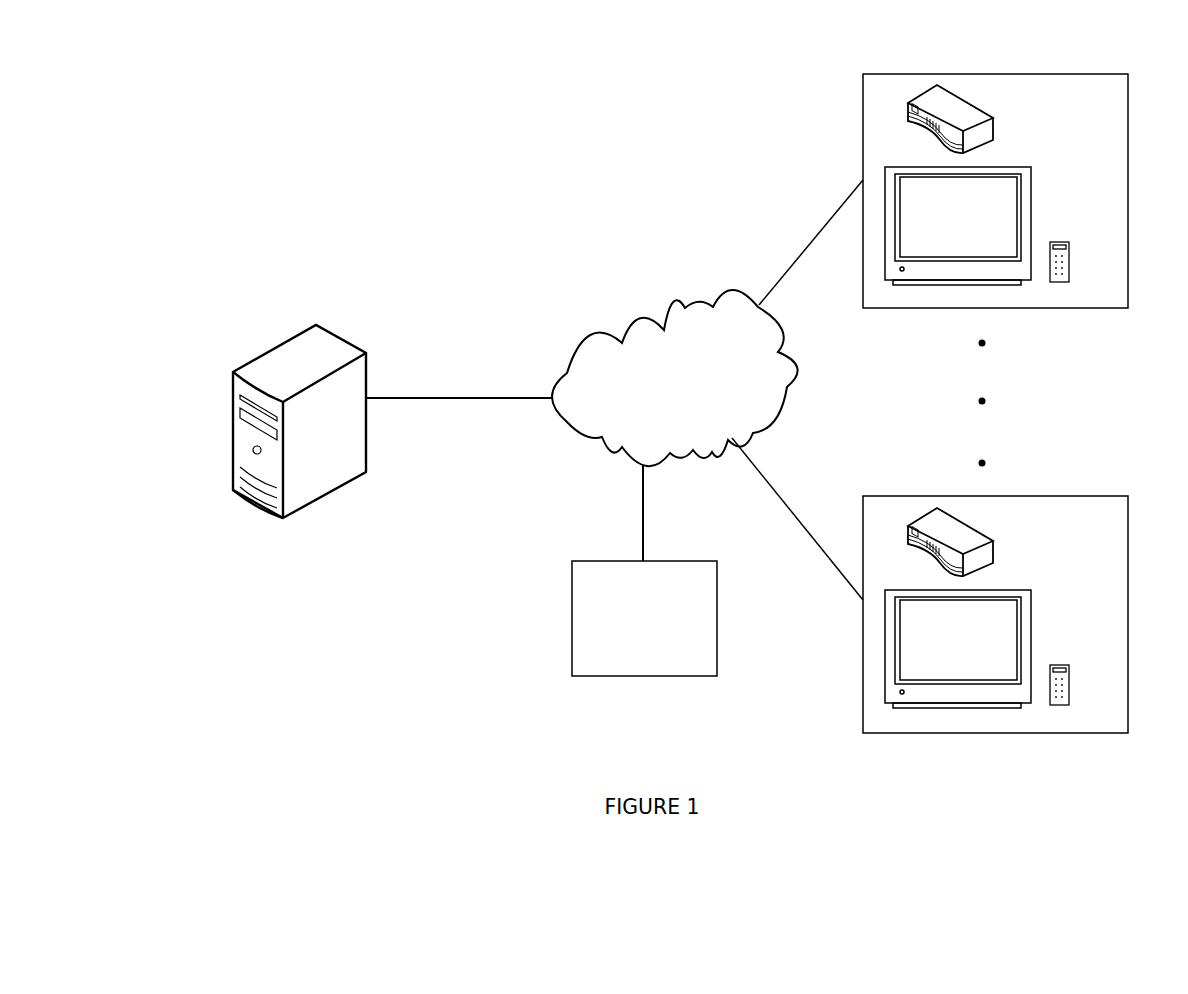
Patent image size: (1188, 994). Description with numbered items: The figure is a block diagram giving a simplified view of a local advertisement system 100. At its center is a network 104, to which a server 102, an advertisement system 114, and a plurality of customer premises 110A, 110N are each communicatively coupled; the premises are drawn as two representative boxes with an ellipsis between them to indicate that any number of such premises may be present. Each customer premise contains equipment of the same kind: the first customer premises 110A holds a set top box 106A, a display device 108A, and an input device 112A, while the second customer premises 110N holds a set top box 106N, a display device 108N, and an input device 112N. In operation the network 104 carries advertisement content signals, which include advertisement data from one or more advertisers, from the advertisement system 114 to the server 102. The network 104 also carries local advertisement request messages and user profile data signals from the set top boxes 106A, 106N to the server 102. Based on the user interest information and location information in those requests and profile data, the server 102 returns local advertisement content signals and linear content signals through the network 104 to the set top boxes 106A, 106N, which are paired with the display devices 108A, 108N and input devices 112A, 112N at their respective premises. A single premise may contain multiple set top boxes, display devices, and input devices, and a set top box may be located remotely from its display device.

The local advertisement system 100 is at (617, 92).
The server 102 is at (366, 353).
The network 104 is at (660, 398).
The set top box 106A is at (992, 125).
The set top box 106N is at (972, 542).
The display device 108A is at (1030, 205).
The display device 108N is at (983, 649).
The customer premises 110A is at (1128, 105).
The customer premises 110N is at (1128, 527).
The input device 112A is at (1070, 260).
The input device 112N is at (1085, 677).
The advertisement system 114 is at (667, 560).